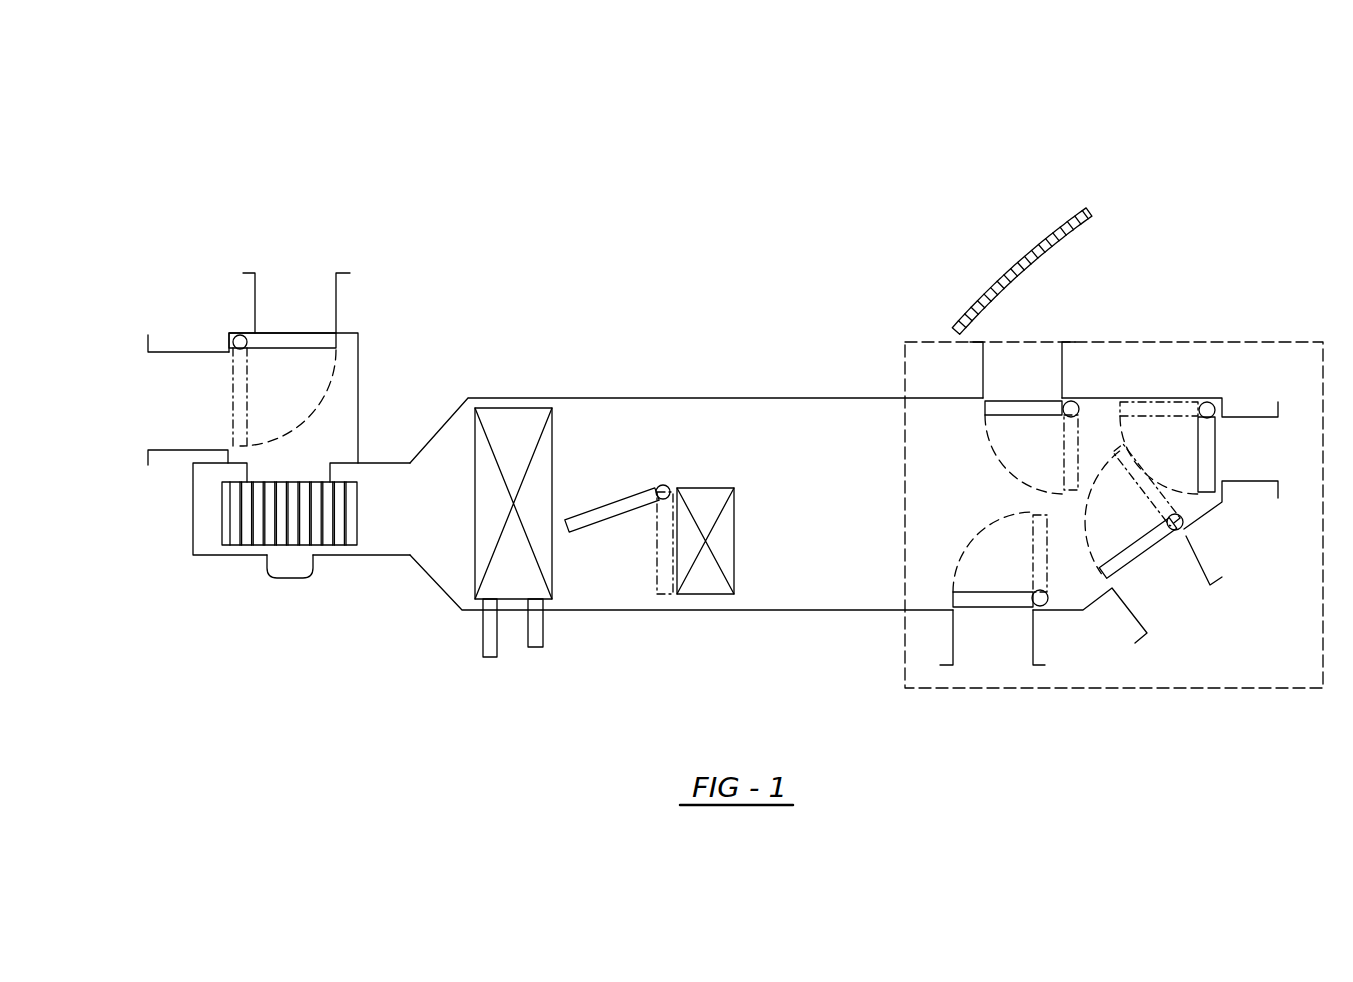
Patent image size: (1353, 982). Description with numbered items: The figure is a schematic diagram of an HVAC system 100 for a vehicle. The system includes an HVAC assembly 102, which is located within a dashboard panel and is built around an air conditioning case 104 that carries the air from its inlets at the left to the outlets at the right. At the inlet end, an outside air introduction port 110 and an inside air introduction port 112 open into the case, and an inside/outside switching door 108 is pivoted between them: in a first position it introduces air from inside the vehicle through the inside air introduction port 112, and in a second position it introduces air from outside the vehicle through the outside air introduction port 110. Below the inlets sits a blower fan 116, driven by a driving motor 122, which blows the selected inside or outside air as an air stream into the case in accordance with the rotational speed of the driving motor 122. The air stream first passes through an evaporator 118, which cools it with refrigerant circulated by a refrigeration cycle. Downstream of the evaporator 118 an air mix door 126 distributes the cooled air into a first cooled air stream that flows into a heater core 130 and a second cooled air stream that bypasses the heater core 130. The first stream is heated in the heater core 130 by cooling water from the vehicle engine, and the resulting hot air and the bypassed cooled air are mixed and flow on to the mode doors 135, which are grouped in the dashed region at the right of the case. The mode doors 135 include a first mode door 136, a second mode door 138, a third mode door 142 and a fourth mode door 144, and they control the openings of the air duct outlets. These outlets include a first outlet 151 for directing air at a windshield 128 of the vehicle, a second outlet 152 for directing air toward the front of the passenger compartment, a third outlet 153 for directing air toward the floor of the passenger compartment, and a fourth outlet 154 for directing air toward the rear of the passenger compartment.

The HVAC system 100 is at (322, 142).
The HVAC assembly 102 is at (712, 232).
The air conditioning case 104 is at (863, 398).
The inside/outside switching door 108 is at (308, 333).
The outside air introduction port 110 is at (277, 288).
The inside air introduction port 112 is at (157, 388).
The blower fan 116 is at (357, 515).
The evaporator 118 is at (517, 408).
The driving motor 122 is at (293, 580).
The air mix door 126 is at (608, 517).
The windshield 128 is at (998, 277).
The heater core 130 is at (734, 540).
The mode doors 135 is at (1233, 340).
The first mode door 136 is at (1032, 400).
The second mode door 138 is at (1218, 443).
The third mode door 142 is at (1133, 567).
The fourth mode door 144 is at (997, 612).
The first outlet 151 is at (1018, 352).
The second outlet 152 is at (1268, 458).
The third outlet 153 is at (1192, 587).
The fourth outlet 154 is at (987, 658).